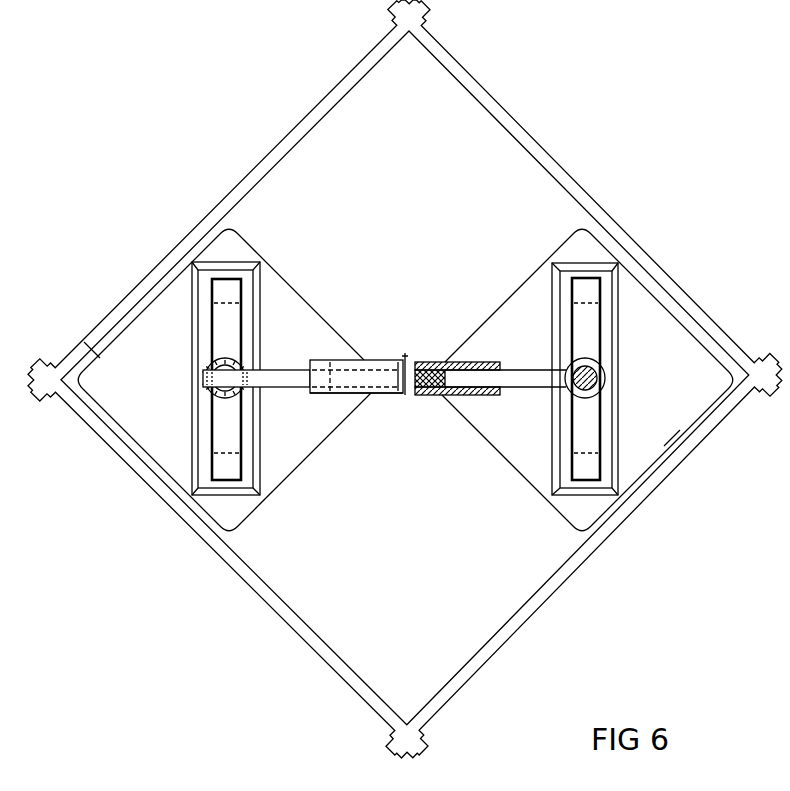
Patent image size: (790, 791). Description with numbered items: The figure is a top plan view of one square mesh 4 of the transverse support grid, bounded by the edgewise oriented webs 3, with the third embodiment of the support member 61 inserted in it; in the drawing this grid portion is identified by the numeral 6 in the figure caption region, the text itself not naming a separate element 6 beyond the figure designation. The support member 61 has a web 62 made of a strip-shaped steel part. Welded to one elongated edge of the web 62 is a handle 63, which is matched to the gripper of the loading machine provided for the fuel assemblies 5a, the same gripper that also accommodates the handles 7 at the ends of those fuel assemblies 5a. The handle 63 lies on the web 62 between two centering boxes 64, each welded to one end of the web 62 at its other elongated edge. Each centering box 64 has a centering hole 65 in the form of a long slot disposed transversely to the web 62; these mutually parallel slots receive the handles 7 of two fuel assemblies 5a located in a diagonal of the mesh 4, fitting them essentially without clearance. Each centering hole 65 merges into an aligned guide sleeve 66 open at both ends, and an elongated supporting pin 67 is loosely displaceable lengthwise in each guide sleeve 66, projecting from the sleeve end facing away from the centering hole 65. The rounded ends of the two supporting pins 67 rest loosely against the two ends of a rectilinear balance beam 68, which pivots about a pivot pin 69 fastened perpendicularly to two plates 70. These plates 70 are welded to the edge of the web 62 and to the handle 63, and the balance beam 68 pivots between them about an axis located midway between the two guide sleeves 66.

The webs 3 is at (291, 133).
The square meshes 4 is at (473, 90).
The fuel assemblies 5a is at (98, 352).
The pivotable panels 6 is at (262, 257).
The handles 7 is at (214, 427).
The support member 61 is at (367, 360).
The web 62 is at (527, 388).
The handle 63 is at (328, 395).
The centering boxes 64 is at (253, 299).
The centering holes 65 is at (211, 299).
The guide sleeves 66 is at (208, 371).
The supporting pins 67 is at (597, 385).
The balance beam 68 is at (276, 387).
The pivot pin 69 is at (430, 360).
The plates 70 is at (485, 362).